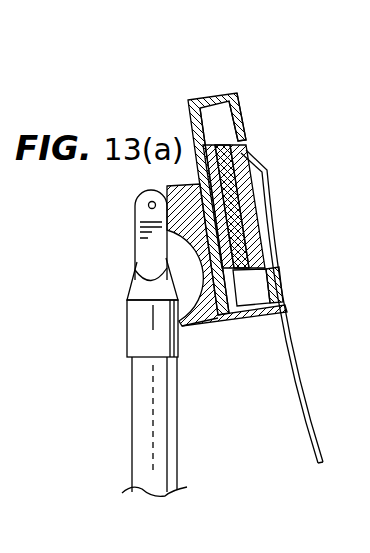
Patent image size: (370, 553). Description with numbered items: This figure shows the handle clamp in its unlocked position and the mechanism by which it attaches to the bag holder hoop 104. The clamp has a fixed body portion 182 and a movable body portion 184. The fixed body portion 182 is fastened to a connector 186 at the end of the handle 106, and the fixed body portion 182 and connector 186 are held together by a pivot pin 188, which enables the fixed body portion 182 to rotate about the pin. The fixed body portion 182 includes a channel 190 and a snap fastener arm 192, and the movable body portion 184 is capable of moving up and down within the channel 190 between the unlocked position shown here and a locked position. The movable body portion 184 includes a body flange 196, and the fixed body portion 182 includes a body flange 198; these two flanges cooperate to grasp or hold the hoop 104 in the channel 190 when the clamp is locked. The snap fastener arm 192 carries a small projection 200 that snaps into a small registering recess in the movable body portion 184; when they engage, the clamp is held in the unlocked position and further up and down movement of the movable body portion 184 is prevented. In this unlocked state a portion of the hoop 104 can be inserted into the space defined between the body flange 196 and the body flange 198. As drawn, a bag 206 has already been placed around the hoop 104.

The hoop 104 is at (237, 212).
The handle 106 is at (132, 393).
The fixed body portion 182 is at (205, 332).
The movable body portion 184 is at (214, 94).
The connector 186 is at (143, 256).
The pivot pin 188 is at (149, 206).
The channel 190 is at (252, 302).
The snap fastener arm 192 is at (192, 158).
The body flange 196 is at (243, 115).
The body flange 198 is at (276, 284).
The projection 200 is at (199, 174).
The bag 206 is at (281, 248).